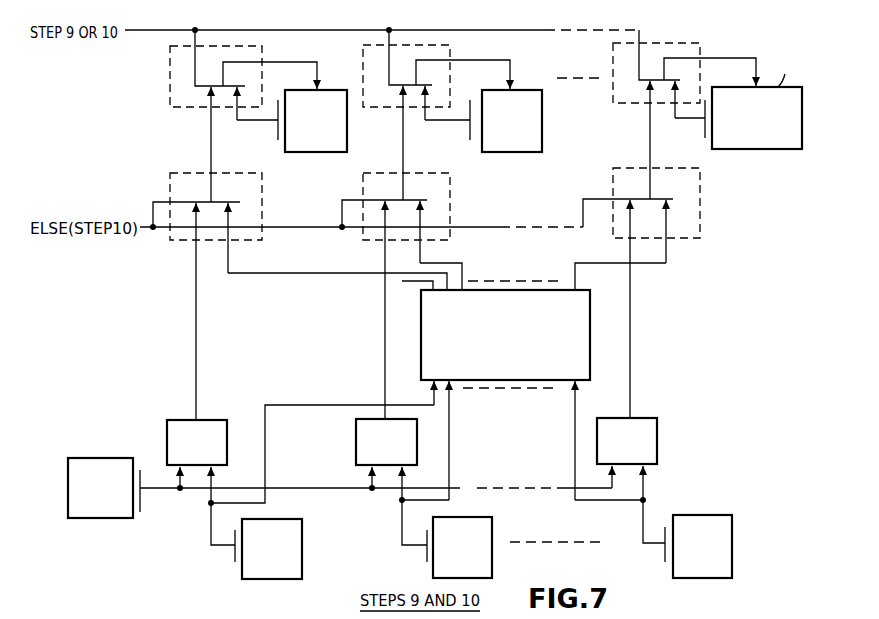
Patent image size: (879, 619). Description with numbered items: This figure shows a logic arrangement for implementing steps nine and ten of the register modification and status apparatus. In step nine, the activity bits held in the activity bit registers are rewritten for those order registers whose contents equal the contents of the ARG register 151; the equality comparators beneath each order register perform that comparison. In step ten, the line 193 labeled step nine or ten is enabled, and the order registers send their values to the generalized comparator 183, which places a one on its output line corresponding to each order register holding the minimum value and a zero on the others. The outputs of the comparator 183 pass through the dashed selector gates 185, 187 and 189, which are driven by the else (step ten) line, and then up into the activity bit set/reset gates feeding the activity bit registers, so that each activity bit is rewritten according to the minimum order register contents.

The line 193 is at (147, 30).
The else (step 10) selector gate 1 185 is at (188, 241).
The else (step 10) selector gate 2 187 is at (378, 241).
The else (step 10) selector gate n 189 is at (619, 238).
The generalized comparator 183 is at (591, 320).
The ARG register 151 is at (85, 519).